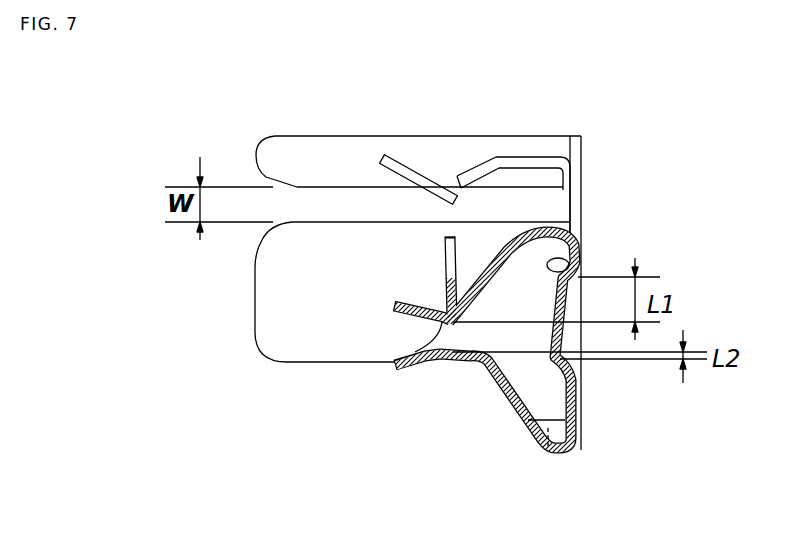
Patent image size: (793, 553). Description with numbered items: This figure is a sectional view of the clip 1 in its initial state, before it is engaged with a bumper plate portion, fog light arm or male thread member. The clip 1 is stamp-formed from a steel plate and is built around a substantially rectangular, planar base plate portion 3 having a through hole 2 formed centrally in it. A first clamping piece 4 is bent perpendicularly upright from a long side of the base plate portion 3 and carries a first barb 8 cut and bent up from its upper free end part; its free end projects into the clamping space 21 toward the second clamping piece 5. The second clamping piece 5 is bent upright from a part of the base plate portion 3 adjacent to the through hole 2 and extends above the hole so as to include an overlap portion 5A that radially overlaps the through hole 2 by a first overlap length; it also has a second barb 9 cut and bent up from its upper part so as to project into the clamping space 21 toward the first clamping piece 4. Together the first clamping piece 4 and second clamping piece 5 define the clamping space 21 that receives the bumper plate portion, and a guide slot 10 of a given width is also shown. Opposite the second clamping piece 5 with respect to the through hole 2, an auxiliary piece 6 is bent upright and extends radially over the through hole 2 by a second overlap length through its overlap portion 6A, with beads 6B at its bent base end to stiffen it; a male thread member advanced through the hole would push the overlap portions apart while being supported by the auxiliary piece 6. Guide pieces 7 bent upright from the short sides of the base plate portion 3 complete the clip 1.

The clip 1 is at (250, 103).
The through hole 2 is at (574, 260).
The base plate portion 3 is at (578, 412).
The first clamping piece 4 is at (502, 160).
The second clamping piece 5 is at (393, 301).
The overlap portion 5A is at (412, 366).
The auxiliary piece 6 is at (481, 367).
The overlap portion 6A is at (450, 362).
The beads 6B is at (546, 455).
The guide piece 7 is at (268, 140).
The first barb 8 is at (448, 193).
The second barb 9 is at (445, 240).
The guide slot 10 is at (377, 190).
The clamping space 21 is at (497, 207).